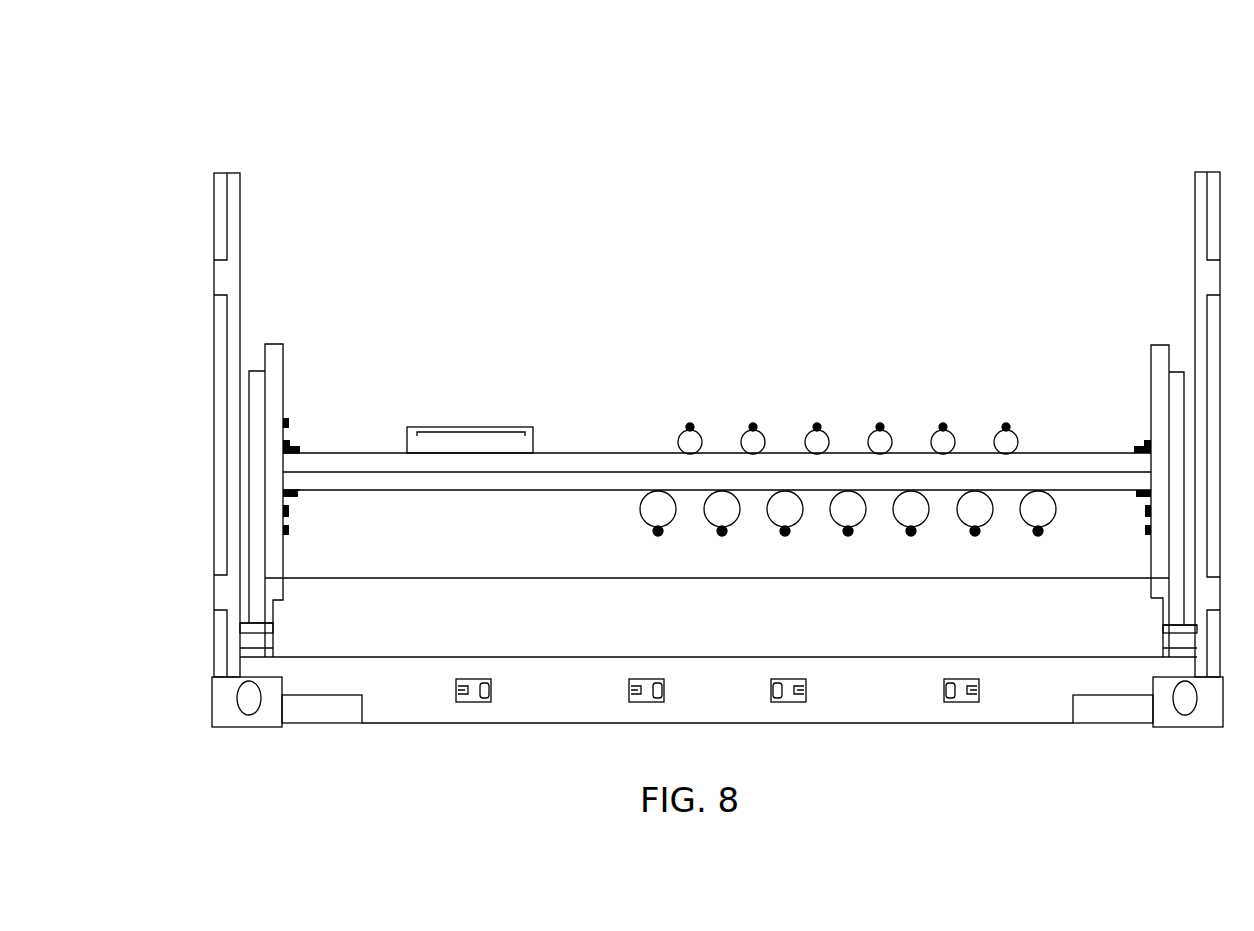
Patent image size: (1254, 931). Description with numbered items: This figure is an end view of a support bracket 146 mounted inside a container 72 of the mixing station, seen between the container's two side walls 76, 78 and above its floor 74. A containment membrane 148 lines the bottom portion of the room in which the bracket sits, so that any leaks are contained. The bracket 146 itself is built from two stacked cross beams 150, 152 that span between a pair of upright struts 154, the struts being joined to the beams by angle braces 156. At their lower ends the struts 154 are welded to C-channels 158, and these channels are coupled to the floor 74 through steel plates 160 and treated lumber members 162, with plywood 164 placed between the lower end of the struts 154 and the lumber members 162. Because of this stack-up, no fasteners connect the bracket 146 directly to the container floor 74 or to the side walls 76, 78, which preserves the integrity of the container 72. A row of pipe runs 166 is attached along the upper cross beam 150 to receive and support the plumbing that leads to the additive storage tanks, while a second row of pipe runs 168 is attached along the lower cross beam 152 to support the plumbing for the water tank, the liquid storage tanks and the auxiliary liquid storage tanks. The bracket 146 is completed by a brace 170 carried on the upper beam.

The container 72 is at (193, 148).
The floor 74 is at (370, 655).
The side wall 76 is at (243, 289).
The side wall 78 is at (1197, 239).
The support bracket 146 is at (545, 337).
The containment membrane 148 is at (1107, 580).
The cross beam 150 is at (639, 452).
The cross beam 152 is at (346, 494).
The struts 154 is at (288, 363).
The angle braces 156 is at (305, 490).
The C-channels 158 is at (250, 472).
The steel plates 160 is at (260, 631).
The treated 2×4s 162 is at (232, 648).
The plywood 164 is at (266, 610).
The pipe runs 166 is at (817, 424).
The pipe runs 168 is at (640, 518).
The brace 170 is at (473, 424).